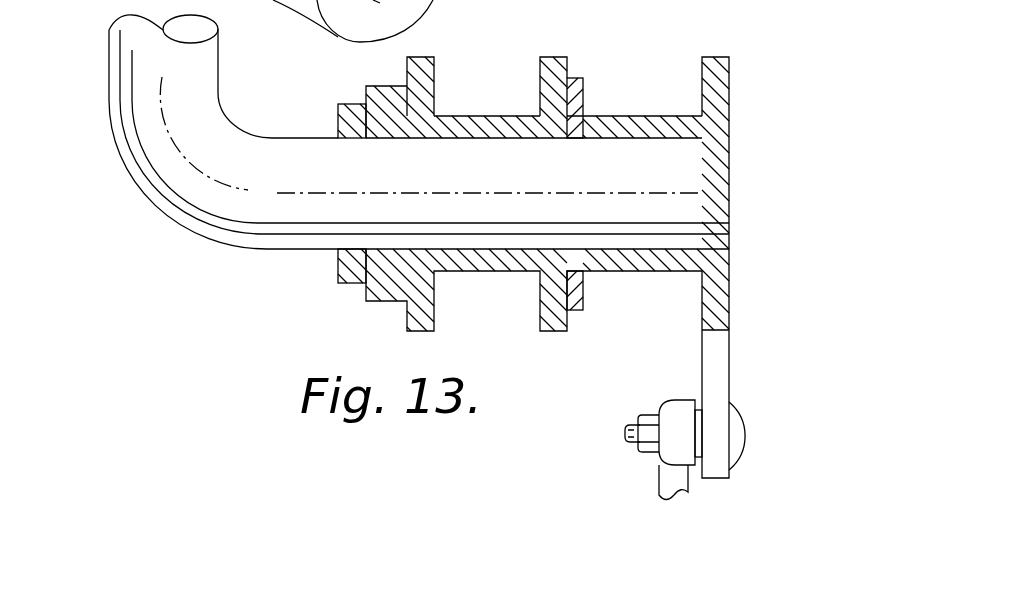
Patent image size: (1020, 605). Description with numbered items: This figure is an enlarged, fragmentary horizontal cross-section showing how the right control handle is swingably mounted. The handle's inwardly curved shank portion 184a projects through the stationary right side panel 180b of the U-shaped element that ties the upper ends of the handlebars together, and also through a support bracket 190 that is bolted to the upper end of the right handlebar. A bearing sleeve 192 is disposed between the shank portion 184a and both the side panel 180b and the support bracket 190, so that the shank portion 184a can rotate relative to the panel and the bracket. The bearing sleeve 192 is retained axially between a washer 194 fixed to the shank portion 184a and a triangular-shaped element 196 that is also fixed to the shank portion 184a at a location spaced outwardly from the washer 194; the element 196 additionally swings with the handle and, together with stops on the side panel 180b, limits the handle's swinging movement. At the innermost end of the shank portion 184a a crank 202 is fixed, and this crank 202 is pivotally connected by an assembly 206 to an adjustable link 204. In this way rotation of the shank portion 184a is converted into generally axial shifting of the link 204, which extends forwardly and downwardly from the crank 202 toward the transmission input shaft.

The shank portion 184a is at (304, 152).
The right side panel 180b is at (422, 67).
The support bracket 190 is at (558, 60).
The bearing sleeve 192 is at (480, 265).
The washer 194 is at (577, 298).
The triangular-shaped element 196 is at (350, 277).
The crank 202 is at (718, 280).
The adjustable link 204 is at (670, 483).
The assembly 206 is at (655, 455).